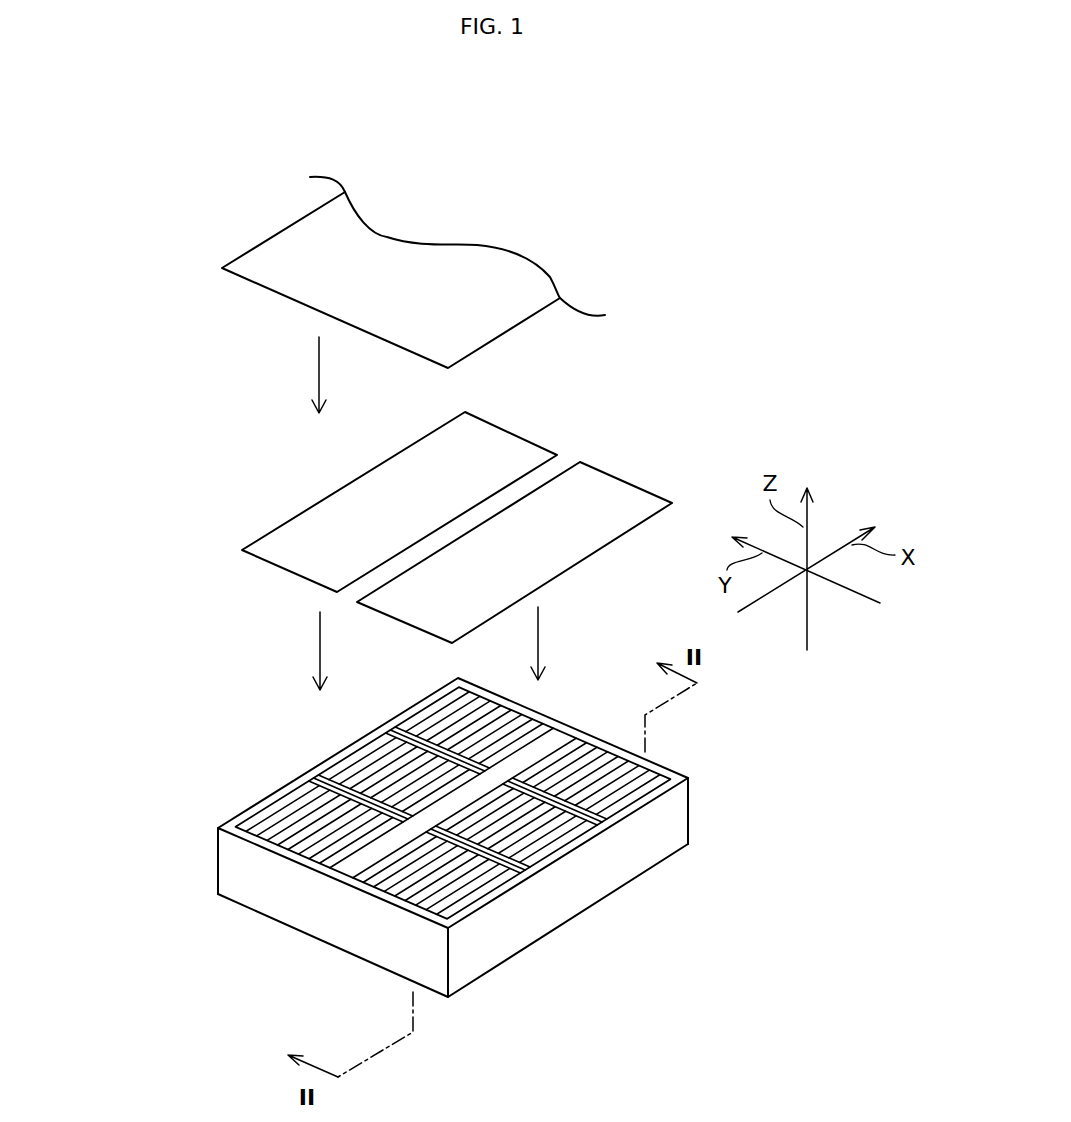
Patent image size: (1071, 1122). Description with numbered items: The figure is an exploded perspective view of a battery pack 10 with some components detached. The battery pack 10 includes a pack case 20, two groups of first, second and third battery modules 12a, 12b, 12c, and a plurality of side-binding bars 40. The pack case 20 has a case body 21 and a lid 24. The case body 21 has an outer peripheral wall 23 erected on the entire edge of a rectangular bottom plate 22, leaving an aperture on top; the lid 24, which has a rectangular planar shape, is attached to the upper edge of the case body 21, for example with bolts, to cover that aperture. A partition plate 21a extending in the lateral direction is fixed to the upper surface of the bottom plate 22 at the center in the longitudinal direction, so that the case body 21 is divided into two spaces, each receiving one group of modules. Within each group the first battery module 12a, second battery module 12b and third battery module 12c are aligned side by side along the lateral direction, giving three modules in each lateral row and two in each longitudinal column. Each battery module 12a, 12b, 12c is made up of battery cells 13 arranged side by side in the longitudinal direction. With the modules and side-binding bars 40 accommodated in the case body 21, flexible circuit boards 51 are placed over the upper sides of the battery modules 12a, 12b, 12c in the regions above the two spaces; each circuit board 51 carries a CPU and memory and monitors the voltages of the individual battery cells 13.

The battery pack 10 is at (737, 757).
The pack case 20 is at (263, 779).
The case body 21 is at (652, 838).
The partition plate 21a is at (350, 867).
The bottom plate 22 is at (528, 947).
The outer peripheral wall 23 is at (490, 937).
The lid 24 is at (473, 272).
The first battery module 12a is at (300, 835).
The second battery module 12b is at (355, 775).
The third battery module 12c is at (505, 722).
The battery cell 13 is at (412, 768).
The side-binding bar 40 is at (405, 732).
The circuit board 51 is at (312, 505).